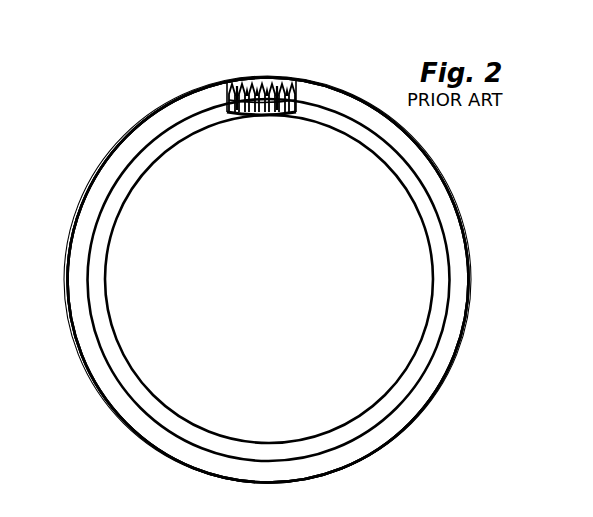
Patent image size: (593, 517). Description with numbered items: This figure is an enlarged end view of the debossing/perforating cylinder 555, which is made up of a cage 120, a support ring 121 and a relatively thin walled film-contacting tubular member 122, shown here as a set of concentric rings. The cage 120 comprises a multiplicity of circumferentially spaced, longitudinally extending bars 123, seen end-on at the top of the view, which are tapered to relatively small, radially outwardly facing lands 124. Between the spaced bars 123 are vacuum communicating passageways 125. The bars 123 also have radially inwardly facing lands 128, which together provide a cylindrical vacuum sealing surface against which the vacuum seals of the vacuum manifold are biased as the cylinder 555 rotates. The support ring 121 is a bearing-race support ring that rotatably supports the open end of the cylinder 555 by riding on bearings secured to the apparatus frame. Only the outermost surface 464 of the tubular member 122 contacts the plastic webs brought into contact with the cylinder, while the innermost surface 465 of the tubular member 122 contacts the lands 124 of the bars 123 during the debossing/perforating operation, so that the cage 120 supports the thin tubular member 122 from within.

The debossing/perforating cylinder 555 is at (142, 121).
The film-contacting tubular member 122 is at (470, 343).
The support ring 121 is at (100, 215).
The cage 120 is at (118, 215).
The outermost surface 464 is at (466, 222).
The innermost surface 465 is at (463, 250).
The bars 123 is at (278, 115).
The radially outwardly facing lands 124 is at (251, 88).
The vacuum communicating passageways 125 is at (237, 86).
The radially inwardly facing lands 128 is at (241, 118).